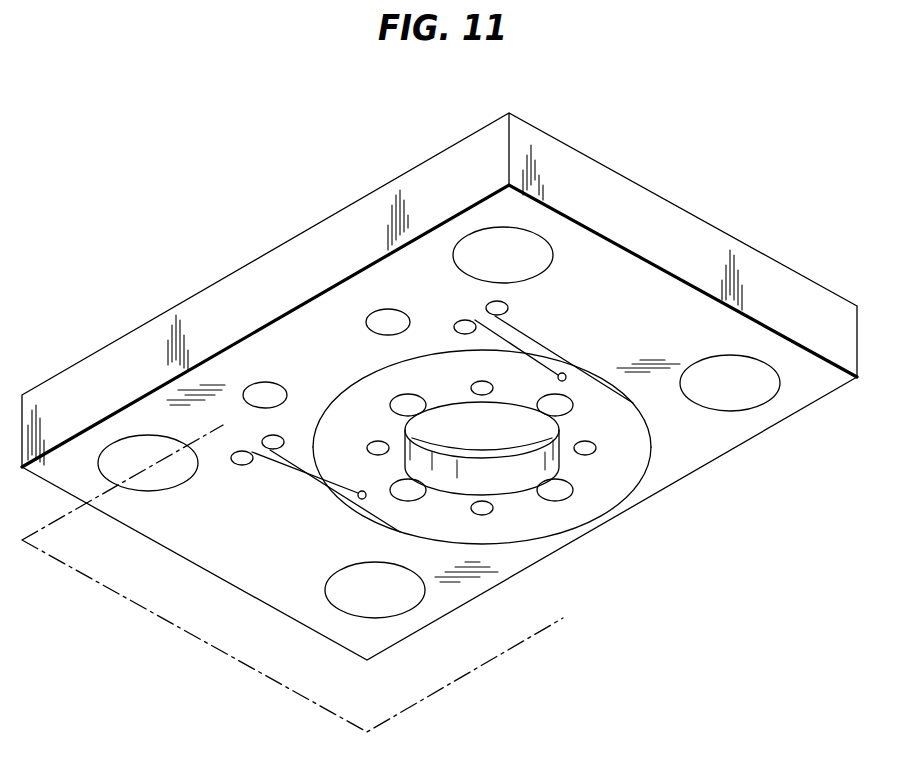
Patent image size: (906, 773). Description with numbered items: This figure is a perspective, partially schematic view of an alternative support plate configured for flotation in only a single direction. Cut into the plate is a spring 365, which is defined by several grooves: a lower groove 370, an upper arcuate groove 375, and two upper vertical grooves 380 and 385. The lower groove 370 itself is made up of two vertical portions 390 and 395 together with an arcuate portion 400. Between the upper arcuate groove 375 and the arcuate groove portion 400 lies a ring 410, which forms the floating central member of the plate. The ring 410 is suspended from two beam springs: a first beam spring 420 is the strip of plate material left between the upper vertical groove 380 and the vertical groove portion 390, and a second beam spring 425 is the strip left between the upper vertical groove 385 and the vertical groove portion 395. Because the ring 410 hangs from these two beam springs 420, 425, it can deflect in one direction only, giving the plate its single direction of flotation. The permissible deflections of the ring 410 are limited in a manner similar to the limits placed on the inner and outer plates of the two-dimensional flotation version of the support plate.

The spring 365 is at (200, 638).
The lower groove 370 is at (652, 435).
The upper arcuate groove 375 is at (352, 382).
The upper vertical groove 380 is at (282, 463).
The upper vertical groove 385 is at (493, 333).
The vertical portion 390 is at (350, 512).
The vertical portion 395 is at (580, 367).
The arcuate portion 400 is at (507, 545).
The ring 410 is at (608, 475).
The beam spring 420 is at (307, 478).
The beam spring 425 is at (533, 348).